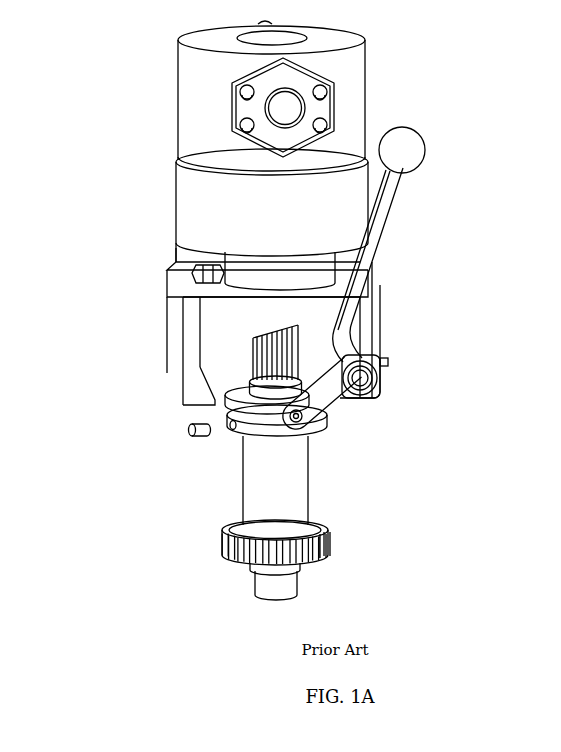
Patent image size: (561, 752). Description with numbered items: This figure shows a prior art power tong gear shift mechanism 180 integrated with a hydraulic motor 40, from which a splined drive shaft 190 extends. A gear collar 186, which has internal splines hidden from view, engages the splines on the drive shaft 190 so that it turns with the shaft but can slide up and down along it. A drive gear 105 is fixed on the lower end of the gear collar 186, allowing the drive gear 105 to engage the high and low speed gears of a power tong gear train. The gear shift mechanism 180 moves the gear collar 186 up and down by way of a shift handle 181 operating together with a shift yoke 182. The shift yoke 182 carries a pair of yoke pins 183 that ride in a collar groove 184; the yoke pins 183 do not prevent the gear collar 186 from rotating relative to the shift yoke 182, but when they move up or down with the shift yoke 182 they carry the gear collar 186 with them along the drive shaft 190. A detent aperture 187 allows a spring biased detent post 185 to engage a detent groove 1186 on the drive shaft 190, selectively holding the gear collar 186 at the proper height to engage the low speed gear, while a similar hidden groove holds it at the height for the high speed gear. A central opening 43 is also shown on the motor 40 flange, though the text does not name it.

The hydraulic motor 40 is at (365, 70).
The central bore of hex flange 43 is at (292, 112).
The drive gear 105 is at (328, 537).
The power tong gear shift mechanism 180 is at (438, 262).
The shift handle 181 is at (422, 160).
The shift yoke 182 is at (323, 397).
The yoke pins 183 is at (318, 432).
The collar groove 184 is at (260, 412).
The spring biased detent post 185 is at (188, 437).
The gear collar 186 is at (297, 485).
The detent aperture 187 is at (228, 428).
The splined drive shaft 190 is at (243, 383).
The detent groove 1186 is at (283, 335).